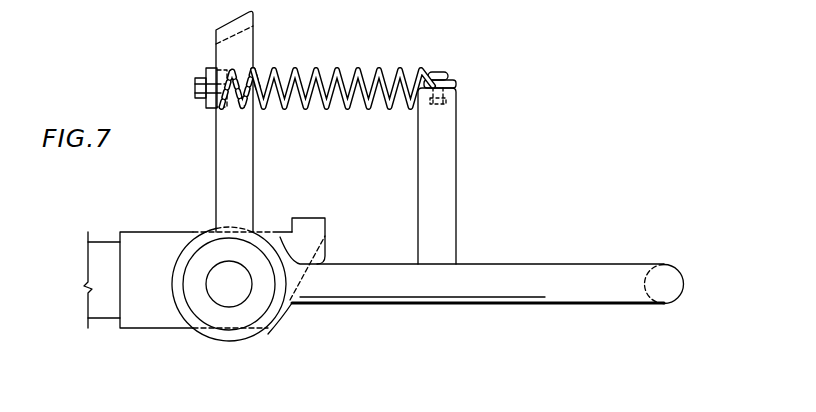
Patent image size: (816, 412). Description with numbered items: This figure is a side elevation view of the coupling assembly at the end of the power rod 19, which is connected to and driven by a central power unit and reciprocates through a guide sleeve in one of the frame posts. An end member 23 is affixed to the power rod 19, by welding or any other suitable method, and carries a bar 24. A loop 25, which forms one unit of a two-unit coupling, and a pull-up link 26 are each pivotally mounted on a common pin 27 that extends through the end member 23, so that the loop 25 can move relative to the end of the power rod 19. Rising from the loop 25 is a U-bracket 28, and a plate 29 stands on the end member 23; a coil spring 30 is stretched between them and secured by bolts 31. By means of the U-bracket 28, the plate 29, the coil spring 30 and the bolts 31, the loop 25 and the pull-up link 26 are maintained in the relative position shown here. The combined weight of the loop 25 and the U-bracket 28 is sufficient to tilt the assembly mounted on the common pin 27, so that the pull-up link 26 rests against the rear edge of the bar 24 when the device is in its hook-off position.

The power rod 19 is at (110, 310).
The end member 23 is at (168, 242).
The bar 24 is at (312, 227).
The loop 25 is at (545, 287).
The pull-up link 26 is at (245, 45).
The common pin 27 is at (233, 292).
The U-bracket 28 is at (440, 170).
The plate 29 is at (213, 72).
The coil spring 30 is at (337, 68).
The bolts 31 is at (200, 95).